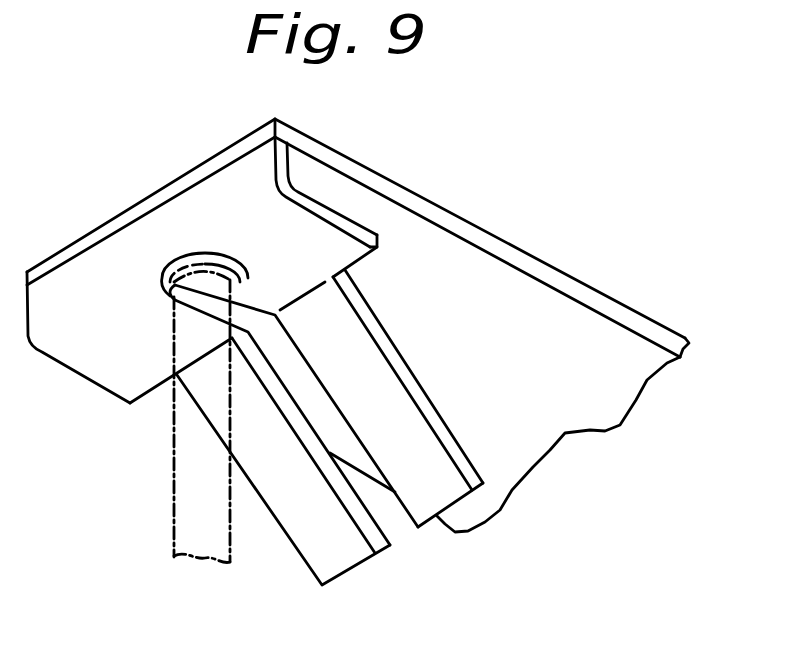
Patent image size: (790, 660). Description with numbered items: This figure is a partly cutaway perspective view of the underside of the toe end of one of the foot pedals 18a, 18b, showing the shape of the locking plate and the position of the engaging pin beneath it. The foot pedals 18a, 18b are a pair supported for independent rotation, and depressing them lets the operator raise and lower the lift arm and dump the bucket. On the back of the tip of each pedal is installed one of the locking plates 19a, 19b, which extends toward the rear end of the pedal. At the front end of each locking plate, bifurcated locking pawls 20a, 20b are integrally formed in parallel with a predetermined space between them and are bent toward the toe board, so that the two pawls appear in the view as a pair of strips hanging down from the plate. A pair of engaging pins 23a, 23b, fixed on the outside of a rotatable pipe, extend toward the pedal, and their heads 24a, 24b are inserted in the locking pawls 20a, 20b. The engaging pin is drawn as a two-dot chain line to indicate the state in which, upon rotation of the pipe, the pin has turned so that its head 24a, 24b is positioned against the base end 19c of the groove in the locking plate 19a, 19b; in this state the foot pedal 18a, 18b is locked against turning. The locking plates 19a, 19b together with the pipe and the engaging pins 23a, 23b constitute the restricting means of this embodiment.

The foot pedal 18a is at (358, 325).
The foot pedal 18b is at (535, 260).
The locking plate 19a is at (369, 221).
The locking plate 19b is at (380, 239).
The base end of the groove 19c is at (172, 286).
The locking pawl 20a is at (356, 453).
The locking pawl 20b is at (409, 370).
The engaging pin 23a is at (138, 416).
The engaging pin 23b is at (173, 452).
The head 24a is at (221, 250).
The head 24b is at (236, 232).